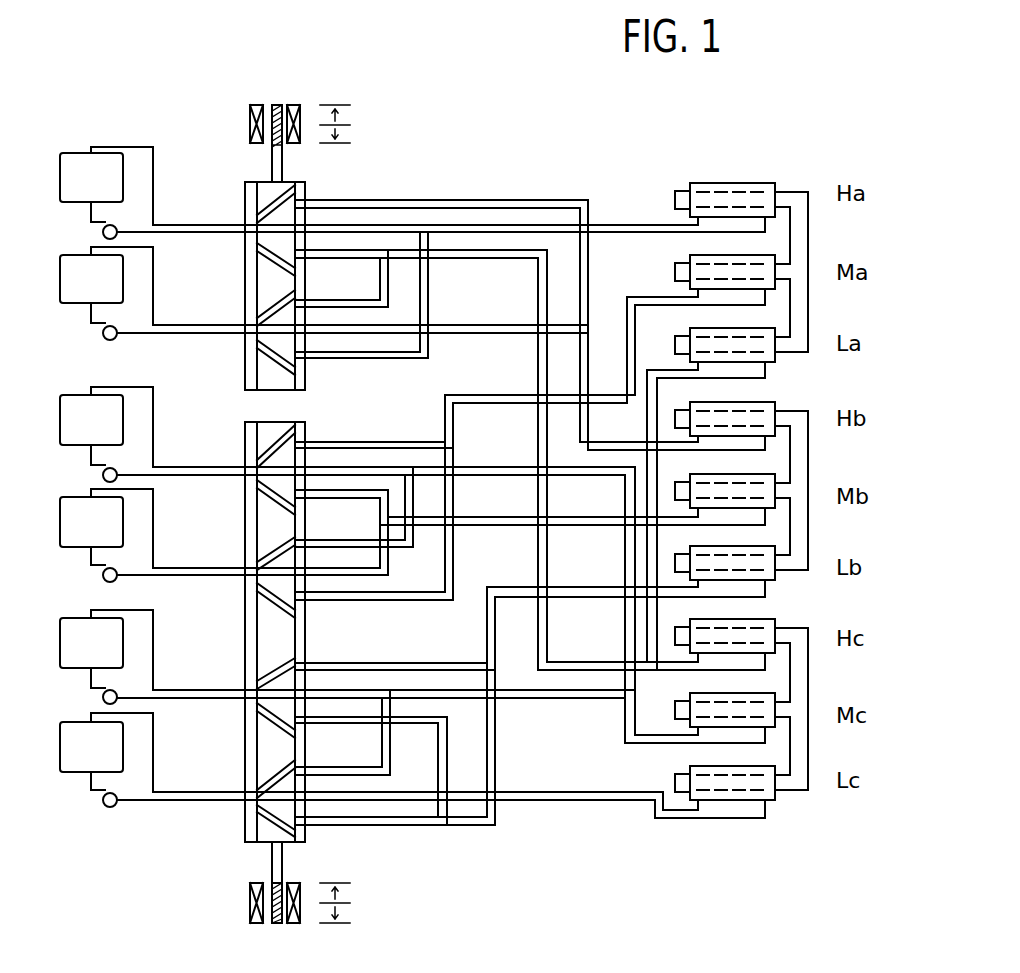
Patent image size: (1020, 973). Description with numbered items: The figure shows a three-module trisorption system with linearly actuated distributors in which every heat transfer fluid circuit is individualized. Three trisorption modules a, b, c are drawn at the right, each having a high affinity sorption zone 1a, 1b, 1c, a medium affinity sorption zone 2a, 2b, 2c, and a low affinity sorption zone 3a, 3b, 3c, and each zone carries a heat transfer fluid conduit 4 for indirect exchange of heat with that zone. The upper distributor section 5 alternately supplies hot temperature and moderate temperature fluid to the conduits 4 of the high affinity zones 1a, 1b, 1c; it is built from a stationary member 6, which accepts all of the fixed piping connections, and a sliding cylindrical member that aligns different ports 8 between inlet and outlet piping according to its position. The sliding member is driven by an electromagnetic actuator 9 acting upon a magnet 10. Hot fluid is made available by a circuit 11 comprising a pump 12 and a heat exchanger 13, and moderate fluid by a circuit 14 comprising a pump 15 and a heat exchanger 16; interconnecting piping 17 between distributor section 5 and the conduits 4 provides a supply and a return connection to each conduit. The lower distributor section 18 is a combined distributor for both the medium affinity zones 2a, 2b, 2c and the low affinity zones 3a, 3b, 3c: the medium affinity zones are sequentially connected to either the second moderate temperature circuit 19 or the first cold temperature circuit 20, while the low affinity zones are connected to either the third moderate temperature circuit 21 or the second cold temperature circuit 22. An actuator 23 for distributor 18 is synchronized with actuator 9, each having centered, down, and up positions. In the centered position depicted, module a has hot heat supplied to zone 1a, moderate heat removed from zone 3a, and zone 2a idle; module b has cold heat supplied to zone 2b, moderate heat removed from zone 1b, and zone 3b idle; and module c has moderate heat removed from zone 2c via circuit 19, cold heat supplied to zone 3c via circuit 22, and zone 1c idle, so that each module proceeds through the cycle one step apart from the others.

The heat transfer fluid conduit 4 is at (740, 182).
The distributor section 5 is at (246, 260).
The stationary member 6 is at (248, 182).
The ports 8 is at (292, 262).
The electromagnetic actuator 9 is at (250, 117).
The magnet 10 is at (283, 150).
The hot temperature HTF circuit 11 is at (154, 198).
The pump 12 is at (112, 226).
The heat exchanger 13 is at (82, 205).
The moderate temperature HTF circuit 14 is at (154, 276).
The pump 15 is at (110, 340).
The heat exchanger 16 is at (82, 313).
The interconnecting piping 17 is at (428, 290).
The distributor section 18 is at (245, 626).
The second moderate temperature HTF circuit 19 is at (154, 422).
The first cold temperature HTF circuit 20 is at (154, 525).
The third moderate temperature HTF circuit 21 is at (154, 664).
The second cold temperature HTF circuit 22 is at (154, 752).
The actuator 23 is at (250, 888).
The high affinity sorption zone 1a is at (676, 196).
The medium affinity sorption zone 2a is at (676, 262).
The low affinity sorption zone 3a is at (676, 338).
The high affinity sorption zone 1b is at (676, 408).
The medium affinity sorption zone 2b is at (676, 485).
The low affinity sorption zone 3b is at (676, 558).
The high affinity sorption zone 1c is at (678, 626).
The medium affinity sorption zone 2c is at (676, 702).
The low affinity sorption zone 3c is at (676, 776).
The trisorption module a is at (808, 238).
The trisorption module b is at (808, 459).
The trisorption module c is at (808, 679).